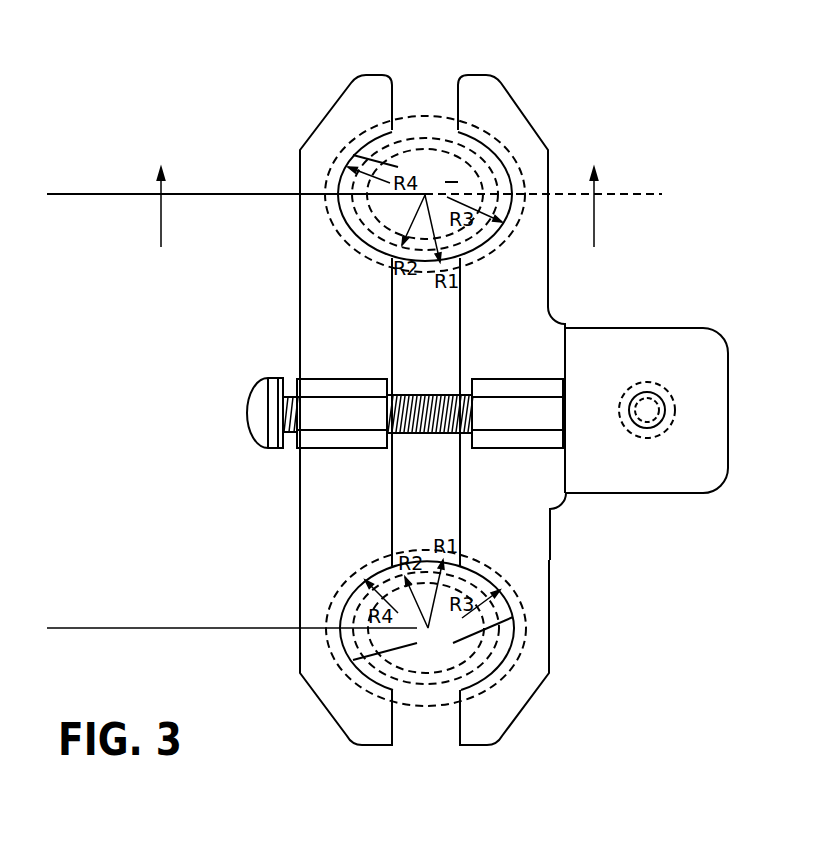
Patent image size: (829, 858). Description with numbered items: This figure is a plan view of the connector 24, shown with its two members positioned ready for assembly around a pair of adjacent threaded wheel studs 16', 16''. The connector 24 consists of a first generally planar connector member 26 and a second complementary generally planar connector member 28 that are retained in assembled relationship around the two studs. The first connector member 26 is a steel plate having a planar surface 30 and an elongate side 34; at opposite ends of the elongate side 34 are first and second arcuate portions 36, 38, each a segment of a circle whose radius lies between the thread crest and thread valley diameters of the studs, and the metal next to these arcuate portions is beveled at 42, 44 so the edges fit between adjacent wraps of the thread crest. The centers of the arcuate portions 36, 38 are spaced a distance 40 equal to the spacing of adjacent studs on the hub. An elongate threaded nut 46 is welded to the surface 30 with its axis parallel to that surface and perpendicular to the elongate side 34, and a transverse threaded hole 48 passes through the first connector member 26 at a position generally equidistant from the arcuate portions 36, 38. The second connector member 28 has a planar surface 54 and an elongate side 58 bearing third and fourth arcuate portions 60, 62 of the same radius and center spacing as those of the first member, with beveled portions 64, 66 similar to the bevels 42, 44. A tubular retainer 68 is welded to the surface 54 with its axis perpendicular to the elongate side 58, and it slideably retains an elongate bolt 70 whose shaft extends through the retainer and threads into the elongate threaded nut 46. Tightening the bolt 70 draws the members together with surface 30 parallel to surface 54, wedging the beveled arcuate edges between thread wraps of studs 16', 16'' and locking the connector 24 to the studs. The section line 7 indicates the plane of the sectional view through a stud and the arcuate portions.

The section line 7- 7 is at (354, 181).
The stud 16' is at (353, 201).
The stud 16'' is at (375, 660).
The connector 24 is at (647, 612).
The first connector member 26 is at (565, 519).
The second connector member 28 is at (298, 523).
The first planar surface 30 is at (530, 320).
The elongate side 34 is at (458, 337).
The first arcuate portion 36 is at (445, 182).
The second arcuate portion 38 is at (453, 643).
The distance 40 is at (65, 205).
The bevel 42 is at (498, 142).
The bevel 44 is at (505, 678).
The elongate threaded nut 46 is at (513, 450).
The transverse threaded hole 48 is at (652, 405).
The planar surface 54 is at (332, 320).
The elongate side 58 is at (390, 328).
The third arcuate portion 60 is at (398, 167).
The fourth arcuate portion 62 is at (417, 645).
The beveled portion 64 is at (347, 148).
The beveled portion 66 is at (338, 648).
The tubular retainer 68 is at (337, 448).
The elongate bolt 70 is at (426, 435).